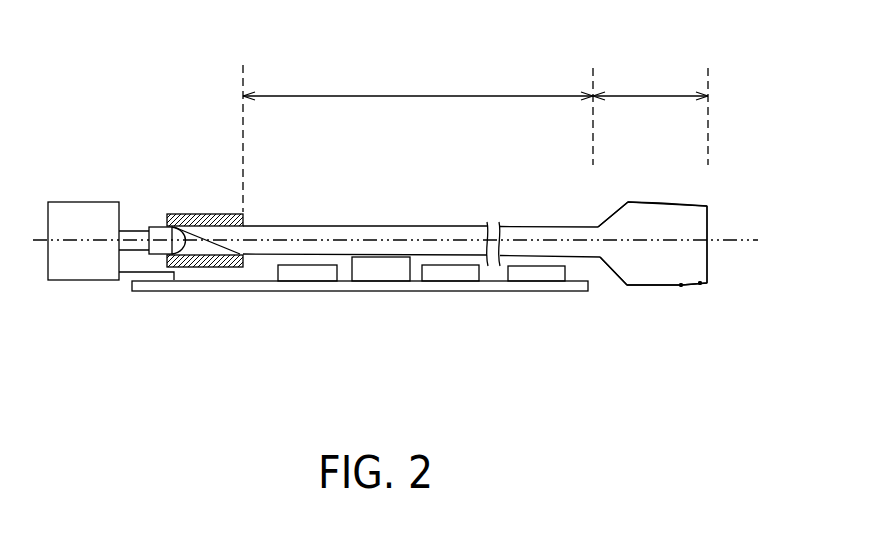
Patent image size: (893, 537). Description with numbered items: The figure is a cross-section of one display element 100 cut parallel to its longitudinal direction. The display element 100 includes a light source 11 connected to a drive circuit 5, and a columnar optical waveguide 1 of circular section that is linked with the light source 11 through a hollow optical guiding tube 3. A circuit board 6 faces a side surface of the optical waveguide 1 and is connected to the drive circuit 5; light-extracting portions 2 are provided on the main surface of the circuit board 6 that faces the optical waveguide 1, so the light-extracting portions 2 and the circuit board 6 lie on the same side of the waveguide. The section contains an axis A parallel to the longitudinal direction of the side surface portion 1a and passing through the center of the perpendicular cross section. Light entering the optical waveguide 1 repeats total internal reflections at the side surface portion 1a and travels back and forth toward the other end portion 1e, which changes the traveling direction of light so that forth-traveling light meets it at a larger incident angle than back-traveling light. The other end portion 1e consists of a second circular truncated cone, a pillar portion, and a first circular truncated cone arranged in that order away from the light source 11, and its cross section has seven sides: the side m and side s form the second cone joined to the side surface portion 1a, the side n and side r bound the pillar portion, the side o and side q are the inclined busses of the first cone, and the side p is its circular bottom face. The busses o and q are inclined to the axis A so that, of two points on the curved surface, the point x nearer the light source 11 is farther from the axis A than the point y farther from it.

The display element 100 is at (590, 350).
The optical waveguide 1 is at (553, 228).
The side surface portion 1a is at (418, 134).
The other end portion 1e is at (650, 111).
The light-extracting portion 2 is at (527, 291).
The hollow optical guiding tube 3 is at (210, 214).
The drive circuit 5 is at (88, 215).
The circuit board 6 is at (243, 285).
The light source 11 is at (155, 227).
The axis A is at (404, 244).
The side m is at (613, 214).
The side n is at (645, 202).
The side o is at (685, 204).
The side p is at (708, 262).
The side s is at (622, 280).
The side r is at (653, 286).
The point x is at (681, 285).
The side q is at (688, 285).
The point y is at (700, 283).